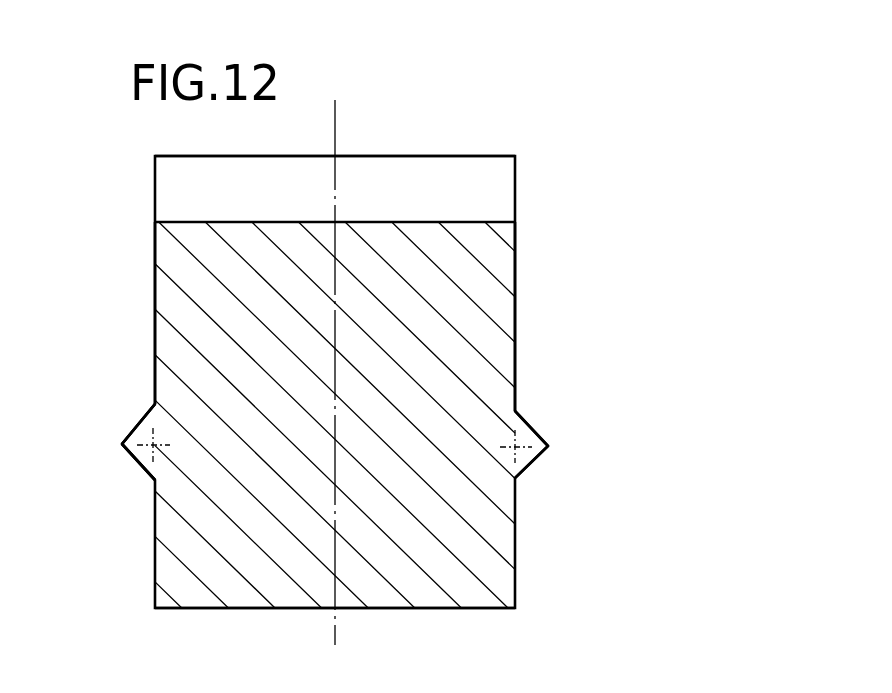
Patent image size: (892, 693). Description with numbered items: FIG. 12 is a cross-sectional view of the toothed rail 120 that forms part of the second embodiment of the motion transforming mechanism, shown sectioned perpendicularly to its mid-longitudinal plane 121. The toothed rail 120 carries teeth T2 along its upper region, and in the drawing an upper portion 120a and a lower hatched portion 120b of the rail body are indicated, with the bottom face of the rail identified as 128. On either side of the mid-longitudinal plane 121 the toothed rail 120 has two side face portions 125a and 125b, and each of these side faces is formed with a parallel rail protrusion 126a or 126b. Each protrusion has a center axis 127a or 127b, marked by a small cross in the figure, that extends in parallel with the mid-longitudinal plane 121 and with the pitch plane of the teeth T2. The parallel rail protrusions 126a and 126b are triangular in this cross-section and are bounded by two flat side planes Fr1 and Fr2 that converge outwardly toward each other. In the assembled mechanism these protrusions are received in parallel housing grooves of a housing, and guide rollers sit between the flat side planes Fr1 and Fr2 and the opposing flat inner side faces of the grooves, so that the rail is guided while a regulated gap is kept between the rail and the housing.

The toothed rail 120 is at (532, 148).
The upper portion of elastic member 120a is at (521, 198).
The lower portion of elastic member 120b is at (521, 553).
The mid-longitudinal plane 121 is at (338, 126).
The teeth T2 is at (430, 158).
The side face portion 125a is at (154, 253).
The side face portion 125b is at (516, 245).
The parallel rail protrusion 126a is at (139, 421).
The parallel rail protrusion 126b is at (528, 424).
The center axis 127a is at (140, 465).
The center axis 127b is at (528, 458).
The flat side plane Fr1 is at (150, 408).
The flat side plane Fr2 is at (152, 484).
The bottom surface 128 is at (258, 609).